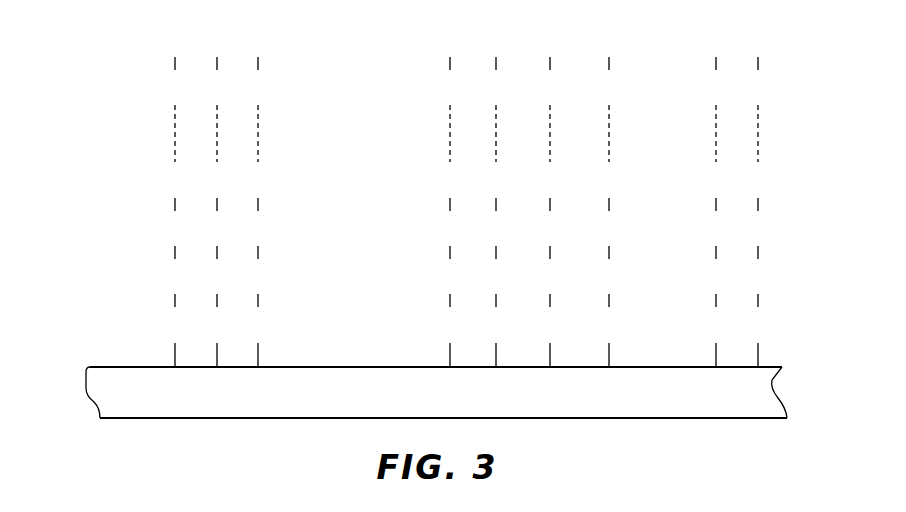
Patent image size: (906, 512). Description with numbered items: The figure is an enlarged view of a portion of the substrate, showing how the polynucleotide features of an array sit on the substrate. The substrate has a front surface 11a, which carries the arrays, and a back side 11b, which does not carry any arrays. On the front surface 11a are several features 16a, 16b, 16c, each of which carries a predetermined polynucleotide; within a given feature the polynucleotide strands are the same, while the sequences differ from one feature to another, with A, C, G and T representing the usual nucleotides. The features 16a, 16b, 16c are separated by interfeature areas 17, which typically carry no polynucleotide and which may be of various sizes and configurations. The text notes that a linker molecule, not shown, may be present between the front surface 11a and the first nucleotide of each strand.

The front surface 11a is at (117, 366).
The back side 11b is at (125, 420).
The feature 16a is at (175, 368).
The feature 16b is at (450, 368).
The feature 16c is at (716, 368).
The interfeature areas 17 is at (333, 366).